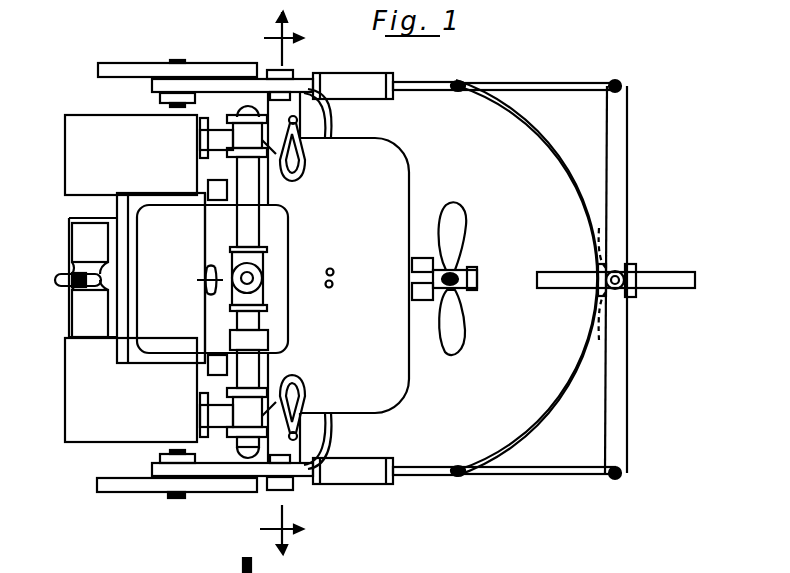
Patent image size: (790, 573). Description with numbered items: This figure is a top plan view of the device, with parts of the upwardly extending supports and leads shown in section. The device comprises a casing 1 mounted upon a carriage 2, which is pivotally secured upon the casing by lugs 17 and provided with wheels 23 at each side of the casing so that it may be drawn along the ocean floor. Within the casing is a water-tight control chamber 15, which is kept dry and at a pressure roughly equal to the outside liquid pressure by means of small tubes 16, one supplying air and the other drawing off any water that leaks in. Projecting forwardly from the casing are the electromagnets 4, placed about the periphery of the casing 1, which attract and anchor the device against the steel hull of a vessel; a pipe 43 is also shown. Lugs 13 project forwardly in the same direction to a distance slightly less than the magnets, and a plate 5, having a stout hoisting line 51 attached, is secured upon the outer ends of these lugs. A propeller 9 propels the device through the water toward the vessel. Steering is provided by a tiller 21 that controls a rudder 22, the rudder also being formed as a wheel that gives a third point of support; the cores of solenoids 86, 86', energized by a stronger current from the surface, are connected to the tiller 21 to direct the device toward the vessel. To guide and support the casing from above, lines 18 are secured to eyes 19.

The casing 1 is at (398, 363).
The carriage 2 is at (518, 438).
The electromagnets 4 is at (131, 278).
The plate 5 is at (68, 321).
The propeller 9 is at (455, 237).
The lugs 13 is at (90, 280).
The control chamber 15 is at (202, 277).
The tubes 16 is at (333, 280).
The lugs 17 is at (287, 108).
The lines 18 is at (300, 141).
The eyes 19 is at (293, 170).
The tiller 21 is at (617, 165).
The rudder 22 is at (663, 277).
The wheels 23 is at (128, 67).
The pipe 43 is at (250, 224).
The hoisting line 51 is at (72, 273).
The solenoid 86 is at (389, 455).
The solenoid 86' is at (389, 70).